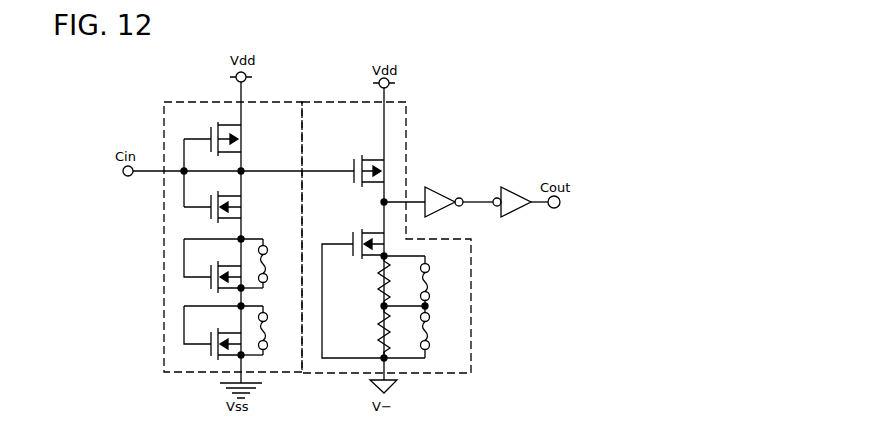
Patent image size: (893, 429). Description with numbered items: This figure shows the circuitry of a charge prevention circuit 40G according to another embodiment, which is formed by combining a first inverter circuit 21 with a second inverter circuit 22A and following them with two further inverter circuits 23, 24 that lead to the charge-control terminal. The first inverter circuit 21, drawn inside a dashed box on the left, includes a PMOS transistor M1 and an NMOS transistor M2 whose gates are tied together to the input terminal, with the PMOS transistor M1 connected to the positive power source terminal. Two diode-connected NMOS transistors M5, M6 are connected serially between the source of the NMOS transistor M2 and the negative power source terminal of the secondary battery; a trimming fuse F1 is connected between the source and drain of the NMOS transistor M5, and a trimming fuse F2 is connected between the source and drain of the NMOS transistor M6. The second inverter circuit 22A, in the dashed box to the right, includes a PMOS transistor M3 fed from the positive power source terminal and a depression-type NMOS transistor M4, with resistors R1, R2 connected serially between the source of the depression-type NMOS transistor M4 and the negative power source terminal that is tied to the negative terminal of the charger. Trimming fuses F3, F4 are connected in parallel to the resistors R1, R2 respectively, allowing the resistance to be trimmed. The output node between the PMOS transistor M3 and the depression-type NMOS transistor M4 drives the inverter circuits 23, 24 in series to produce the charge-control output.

The first inverter circuit 21 is at (202, 103).
The second inverter circuit 22A is at (348, 103).
The inverter circuit 23 is at (441, 188).
The inverter circuit 24 is at (517, 188).
The charge prevention circuit 40G is at (502, 127).
The PMOS transistor M1 is at (212, 131).
The NMOS transistor M2 is at (212, 200).
The PMOS transistor M3 is at (369, 165).
The depression-type NMOS transistor M4 is at (353, 286).
The diode-connected NMOS transistor M5 is at (212, 266).
The diode-connected NMOS transistor M6 is at (212, 333).
The resistor R1 is at (372, 281).
The resistor R2 is at (372, 332).
The trimming fuse F1 is at (273, 263).
The trimming fuse F2 is at (273, 330).
The trimming fuse F3 is at (436, 281).
The trimming fuse F4 is at (436, 332).